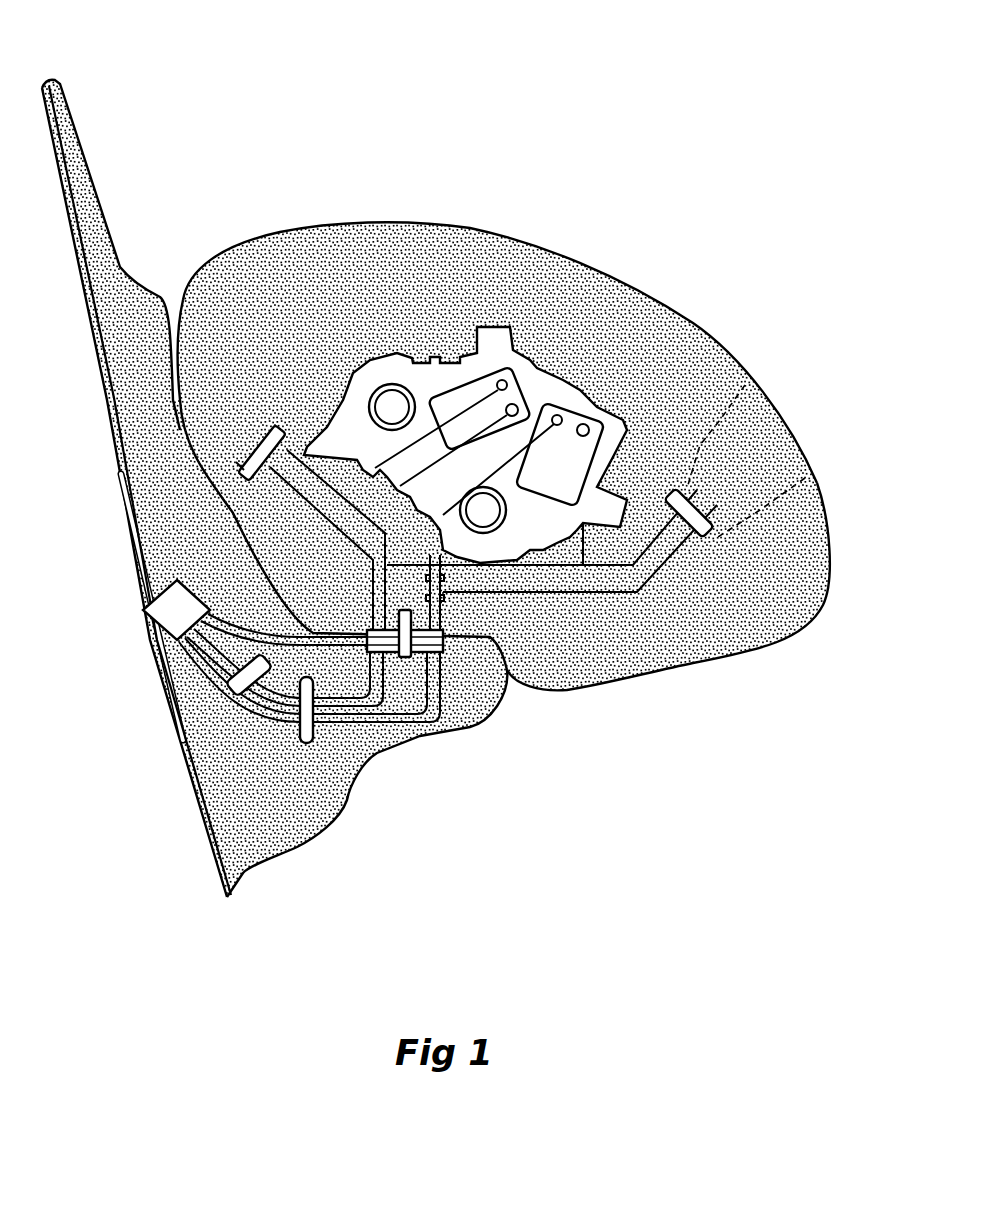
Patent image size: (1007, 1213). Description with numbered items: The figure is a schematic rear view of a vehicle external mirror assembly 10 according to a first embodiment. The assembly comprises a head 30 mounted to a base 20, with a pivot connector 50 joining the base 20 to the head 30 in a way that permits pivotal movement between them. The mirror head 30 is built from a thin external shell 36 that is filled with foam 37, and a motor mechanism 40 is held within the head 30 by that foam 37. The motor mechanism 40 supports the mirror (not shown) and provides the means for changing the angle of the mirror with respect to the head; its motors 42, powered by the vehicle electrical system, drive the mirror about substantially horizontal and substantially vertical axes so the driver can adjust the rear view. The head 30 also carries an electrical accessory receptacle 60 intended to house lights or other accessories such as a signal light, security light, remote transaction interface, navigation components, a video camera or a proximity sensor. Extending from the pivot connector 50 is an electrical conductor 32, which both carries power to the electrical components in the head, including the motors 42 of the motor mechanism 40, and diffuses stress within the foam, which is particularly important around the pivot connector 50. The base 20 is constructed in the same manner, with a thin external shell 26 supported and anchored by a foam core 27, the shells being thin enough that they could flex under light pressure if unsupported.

The vehicle external mirror assembly 10 is at (480, 134).
The base 20 is at (322, 852).
The external shell 26 is at (261, 867).
The foam 27 is at (293, 773).
The head 30 is at (666, 281).
The electrical conductor 32 is at (540, 592).
The external shell 36 is at (623, 280).
The foam 37 is at (670, 363).
The motor mechanism 40 is at (465, 362).
The motors 42 is at (584, 408).
The pivot connector 50 is at (458, 658).
The electrical accessory receptacle 60 is at (801, 427).